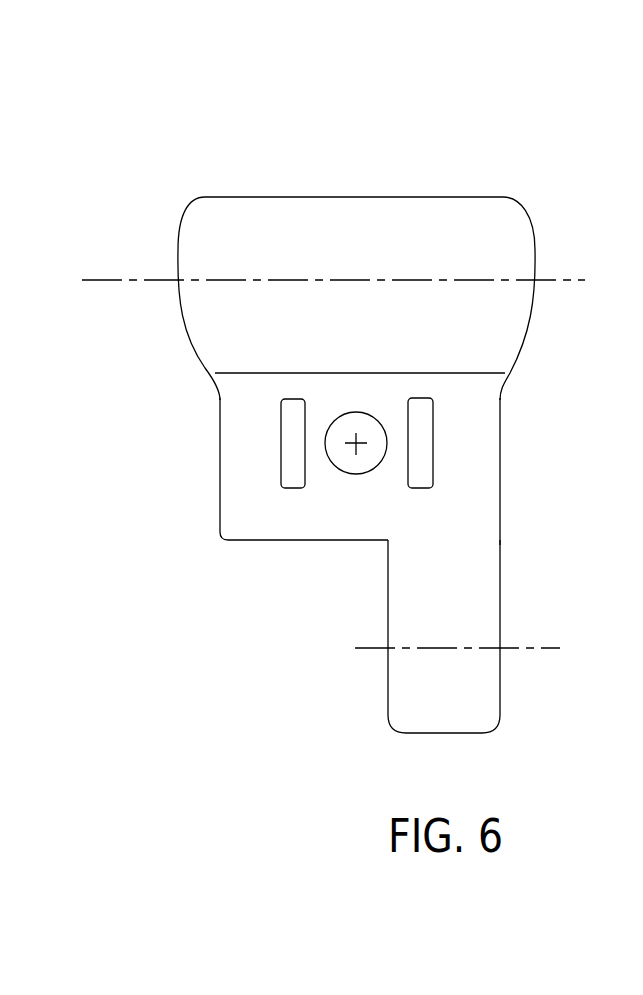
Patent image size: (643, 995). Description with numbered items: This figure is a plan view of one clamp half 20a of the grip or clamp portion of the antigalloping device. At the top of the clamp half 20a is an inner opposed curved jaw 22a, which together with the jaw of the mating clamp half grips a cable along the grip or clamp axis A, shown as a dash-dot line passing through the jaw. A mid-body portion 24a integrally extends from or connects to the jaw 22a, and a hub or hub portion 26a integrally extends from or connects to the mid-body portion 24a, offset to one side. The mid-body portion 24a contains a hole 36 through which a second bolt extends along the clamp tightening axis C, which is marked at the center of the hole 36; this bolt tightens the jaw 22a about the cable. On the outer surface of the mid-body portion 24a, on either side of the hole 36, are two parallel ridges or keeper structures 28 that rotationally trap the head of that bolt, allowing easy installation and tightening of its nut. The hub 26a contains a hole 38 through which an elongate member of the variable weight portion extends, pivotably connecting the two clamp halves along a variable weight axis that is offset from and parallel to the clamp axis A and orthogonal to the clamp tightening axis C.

The clamp half 20a is at (341, 418).
The inner opposed curved jaw 22a is at (532, 243).
The mid-body portion 24a is at (230, 514).
The hub portion 26a is at (447, 735).
The parallel ridges or keeper structures 28 is at (282, 445).
The hole 36 is at (338, 472).
The hole 38 is at (538, 645).
The grip or clamp axis A is at (101, 278).
The clamp tightening axis C is at (357, 450).